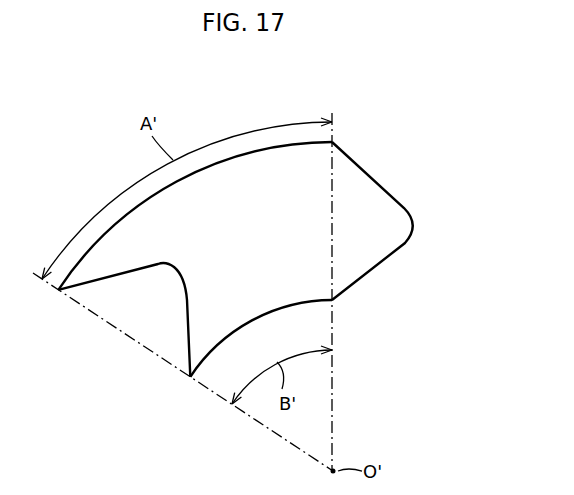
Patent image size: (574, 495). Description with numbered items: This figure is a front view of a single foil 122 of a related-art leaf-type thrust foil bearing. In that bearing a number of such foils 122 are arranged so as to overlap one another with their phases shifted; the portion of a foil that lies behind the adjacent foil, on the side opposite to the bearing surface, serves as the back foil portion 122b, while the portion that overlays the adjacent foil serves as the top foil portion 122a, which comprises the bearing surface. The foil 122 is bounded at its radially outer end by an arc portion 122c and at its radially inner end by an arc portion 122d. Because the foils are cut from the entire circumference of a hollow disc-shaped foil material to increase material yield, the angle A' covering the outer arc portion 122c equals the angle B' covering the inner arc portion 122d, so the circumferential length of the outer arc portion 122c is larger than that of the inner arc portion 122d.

The foil 122 is at (246, 252).
The top foil portion 122a is at (310, 242).
The back foil portion 122b is at (193, 237).
The arc portion at radially outer end 122c is at (132, 209).
The arc portion at radially inner end 122d is at (300, 304).